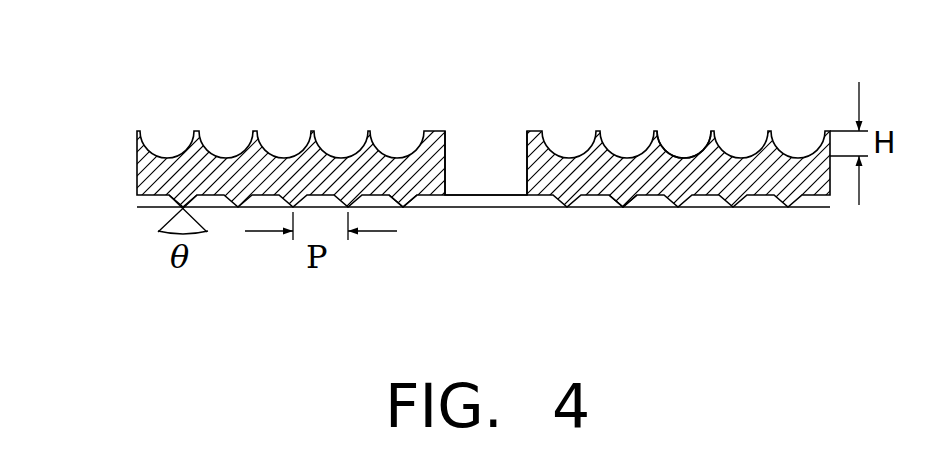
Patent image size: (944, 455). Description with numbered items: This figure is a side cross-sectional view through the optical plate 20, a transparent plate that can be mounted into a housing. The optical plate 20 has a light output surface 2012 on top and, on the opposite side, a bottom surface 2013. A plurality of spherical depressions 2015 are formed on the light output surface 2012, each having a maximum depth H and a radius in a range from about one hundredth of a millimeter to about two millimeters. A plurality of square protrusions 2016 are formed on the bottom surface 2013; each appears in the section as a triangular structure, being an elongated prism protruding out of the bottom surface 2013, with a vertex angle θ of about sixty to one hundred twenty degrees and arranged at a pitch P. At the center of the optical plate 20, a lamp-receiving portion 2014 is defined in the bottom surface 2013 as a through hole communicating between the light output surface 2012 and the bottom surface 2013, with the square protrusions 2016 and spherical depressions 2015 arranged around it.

The optical plate 20 is at (147, 73).
The light output surface 2012 is at (535, 131).
The bottom surface 2013 is at (420, 193).
The lamp-receiving portion 2014 is at (473, 167).
The spherical depression 2015 is at (682, 140).
The square protrusion 2016 is at (625, 207).